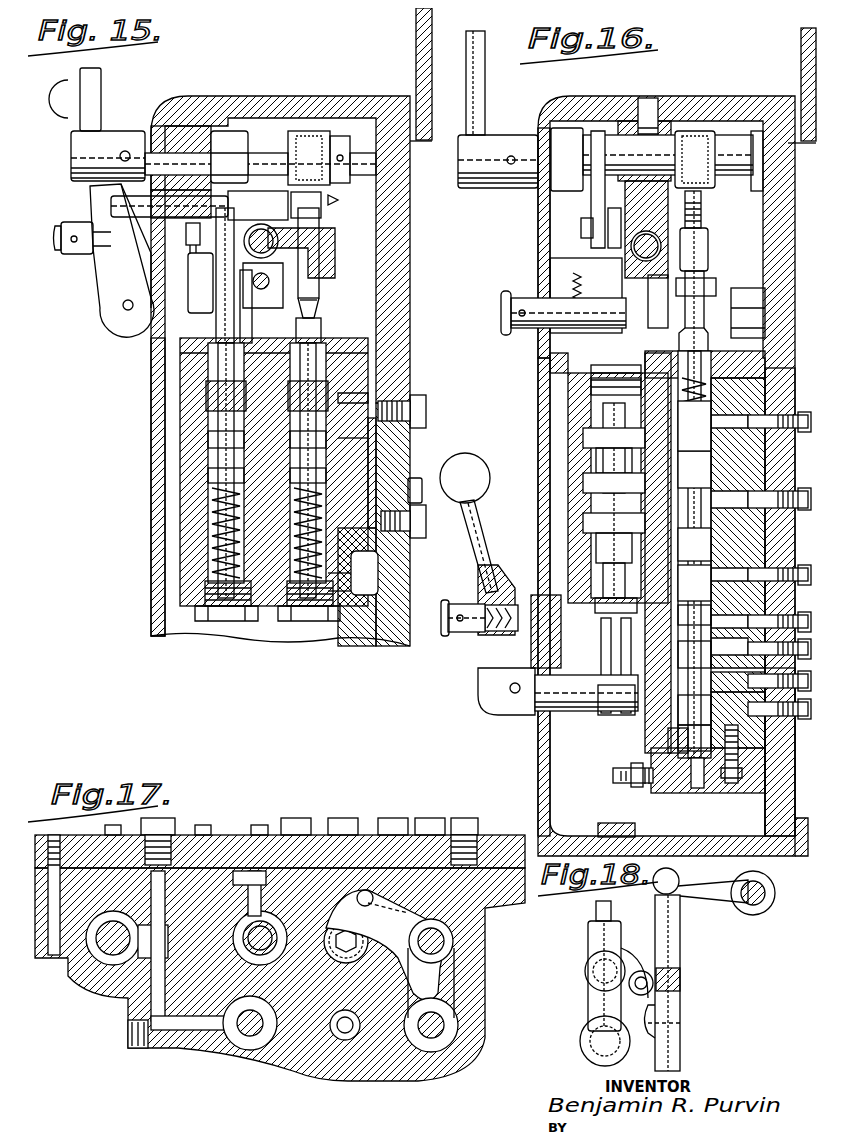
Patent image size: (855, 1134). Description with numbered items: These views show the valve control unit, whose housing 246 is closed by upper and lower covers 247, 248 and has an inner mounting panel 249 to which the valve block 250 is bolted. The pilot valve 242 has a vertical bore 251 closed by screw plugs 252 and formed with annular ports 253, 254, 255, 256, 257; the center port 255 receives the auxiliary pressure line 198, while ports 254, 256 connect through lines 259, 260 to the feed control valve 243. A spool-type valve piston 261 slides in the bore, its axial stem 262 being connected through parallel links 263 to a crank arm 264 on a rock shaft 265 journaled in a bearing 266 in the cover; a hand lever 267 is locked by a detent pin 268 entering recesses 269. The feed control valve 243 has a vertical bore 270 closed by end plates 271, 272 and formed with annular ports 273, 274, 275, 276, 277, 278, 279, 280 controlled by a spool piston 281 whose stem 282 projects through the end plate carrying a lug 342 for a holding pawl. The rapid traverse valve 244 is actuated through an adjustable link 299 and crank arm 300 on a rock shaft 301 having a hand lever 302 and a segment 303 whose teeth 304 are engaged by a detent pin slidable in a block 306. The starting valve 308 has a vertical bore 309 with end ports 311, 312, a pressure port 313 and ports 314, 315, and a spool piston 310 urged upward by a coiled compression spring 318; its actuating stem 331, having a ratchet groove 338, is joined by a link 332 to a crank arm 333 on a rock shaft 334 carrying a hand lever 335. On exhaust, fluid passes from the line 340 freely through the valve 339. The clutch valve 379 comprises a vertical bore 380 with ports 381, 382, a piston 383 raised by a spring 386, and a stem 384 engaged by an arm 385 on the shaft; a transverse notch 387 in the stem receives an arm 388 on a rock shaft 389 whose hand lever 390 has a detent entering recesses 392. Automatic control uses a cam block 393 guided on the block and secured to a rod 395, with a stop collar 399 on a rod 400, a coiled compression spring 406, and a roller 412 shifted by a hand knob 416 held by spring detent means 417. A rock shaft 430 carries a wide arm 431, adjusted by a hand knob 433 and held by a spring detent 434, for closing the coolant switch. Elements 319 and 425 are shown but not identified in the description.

In FIG. 17, the auxiliary pressure line 198 is at (180, 1044).
In FIG. 16, the pilot valve 242 is at (548, 363).
In FIG. 17, the pilot valve 242 is at (242, 1045).
In FIG. 16, the feed control valve 243 is at (710, 780).
In FIG. 17, the feed control valve 243 is at (235, 900).
In FIG. 17, the rapid traverse valve 244 is at (98, 952).
In FIG. 15, the housing 246 is at (364, 106).
In FIG. 16, the housing 246 is at (712, 110).
In FIG. 15, the upper cover 247 is at (165, 118).
In FIG. 16, the upper cover 247 is at (532, 214).
In FIG. 15, the lower cover 248 is at (143, 441).
In FIG. 16, the lower cover 248 is at (530, 756).
In FIG. 15, the inner mounting panel 249 is at (366, 460).
In FIG. 16, the inner mounting panel 249 is at (770, 786).
In FIG. 17, the inner mounting panel 249 is at (500, 832).
In FIG. 15, the valve block 250 is at (175, 540).
In FIG. 16, the valve block 250 is at (745, 380).
In FIG. 17, the valve block 250 is at (470, 979).
In FIG. 16, the vertical bore 251 is at (585, 430).
In FIG. 16, the screw plugs 252 is at (603, 368).
In FIG. 16, the annular port 253 is at (580, 430).
In FIG. 16, the annular port 254 is at (590, 455).
In FIG. 16, the center port 255 is at (582, 476).
In FIG. 16, the annular port 256 is at (582, 514).
In FIG. 16, the annular port 257 is at (590, 540).
In FIG. 16, the line 259 is at (660, 538).
In FIG. 16, the line 260 is at (660, 463).
In FIG. 16, the valve piston 261 is at (600, 425).
In FIG. 16, the axial stem 262 is at (600, 570).
In FIG. 16, the parallel links 263 is at (593, 643).
In FIG. 16, the crank arm 264 is at (607, 708).
In FIG. 16, the rock shaft 265 is at (567, 705).
In FIG. 16, the bearing 266 is at (535, 712).
In FIG. 16, the hand lever 267 is at (466, 464).
In FIG. 16, the detent pin 268 is at (500, 610).
In FIG. 16, the recesses 269 is at (510, 620).
In FIG. 16, the vertical bore 270 is at (665, 710).
In FIG. 16, the end plate 271 is at (728, 340).
In FIG. 16, the end plate 272 is at (663, 785).
In FIG. 16, the annular port 273 is at (712, 460).
In FIG. 16, the annular port 274 is at (769, 497).
In FIG. 16, the annular port 275 is at (712, 540).
In FIG. 16, the annular port 276 is at (771, 572).
In FIG. 16, the annular port 277 is at (769, 619).
In FIG. 16, the annular port 278 is at (769, 646).
In FIG. 16, the annular port 279 is at (761, 679).
In FIG. 16, the annular port 280 is at (761, 720).
In FIG. 16, the piston 281 is at (690, 780).
In FIG. 16, the stem 282 is at (650, 355).
In FIG. 16, the adjustable link 299 is at (700, 237).
In FIG. 16, the crank arm 300 is at (730, 160).
In FIG. 16, the rock shaft 301 is at (690, 125).
In FIG. 16, the hand lever 302 is at (477, 78).
In FIG. 16, the segment 303 is at (590, 194).
In FIG. 16, the teeth 304 is at (590, 150).
In FIG. 16, the block 306 is at (650, 130).
In FIG. 15, the starting valve 308 is at (297, 616).
In FIG. 17, the starting valve 308 is at (448, 932).
In FIG. 15, the vertical bore 309 is at (360, 566).
In FIG. 15, the piston 310 is at (410, 470).
In FIG. 15, the end port 311 is at (350, 385).
In FIG. 15, the end port 312 is at (365, 548).
In FIG. 15, the port 313 is at (340, 432).
In FIG. 15, the port 314 is at (412, 415).
In FIG. 15, the port 315 is at (405, 514).
In FIG. 15, the coiled compression spring 318 is at (362, 581).
In FIG. 17, the bracket 319 is at (338, 915).
In FIG. 15, the actuating stem 331 is at (305, 318).
In FIG. 15, the link 332 is at (327, 194).
In FIG. 15, the crank arm 333 is at (302, 123).
In FIG. 15, the rock shaft 334 is at (178, 137).
In FIG. 18, the rock shaft 334 is at (748, 898).
In FIG. 15, the hand lever 335 is at (93, 70).
In FIG. 15, the annular ratchet groove 338 is at (305, 306).
In FIG. 17, the valve 339 is at (338, 1035).
In FIG. 16, the line 340 is at (618, 775).
In FIG. 16, the lug 342 is at (700, 300).
In FIG. 15, the clutch valve 379 is at (192, 616).
In FIG. 17, the clutch valve 379 is at (424, 1045).
In FIG. 15, the vertical bore 380 is at (200, 390).
In FIG. 15, the port 381 is at (200, 458).
In FIG. 15, the port 382 is at (200, 484).
In FIG. 15, the piston 383 is at (208, 418).
In FIG. 15, the stem 384 is at (208, 305).
In FIG. 18, the stem 384 is at (672, 1044).
In FIG. 15, the arm 385 is at (228, 125).
In FIG. 18, the arm 385 is at (703, 886).
In FIG. 15, the spring 386 is at (205, 530).
In FIG. 15, the transverse notch 387 is at (175, 285).
In FIG. 18, the transverse notch 387 is at (672, 974).
In FIG. 15, the arm 388 is at (238, 296).
In FIG. 18, the arm 388 is at (660, 1005).
In FIG. 18, the rock shaft 389 is at (572, 1033).
In FIG. 15, the hand lever 390 is at (95, 265).
In FIG. 18, the hand lever 390 is at (580, 990).
In FIG. 18, the recesses 392 is at (634, 963).
In FIG. 16, the cam block 393 is at (693, 205).
In FIG. 15, the rod 395 is at (300, 248).
In FIG. 16, the rod 395 is at (625, 260).
In FIG. 15, the stop collar 399 is at (265, 262).
In FIG. 15, the rod 400 is at (260, 275).
In FIG. 15, the coiled compression spring 406 is at (270, 230).
In FIG. 16, the roller 412 is at (655, 282).
In FIG. 16, the hand knob 416 is at (493, 295).
In FIG. 16, the spring detent means 417 is at (552, 263).
In FIG. 16, the nut 425 is at (590, 216).
In FIG. 15, the rock shaft 430 is at (160, 195).
In FIG. 15, the wide arm 431 is at (266, 186).
In FIG. 15, the hand knob 433 is at (90, 194).
In FIG. 15, the spring detent 434 is at (186, 258).